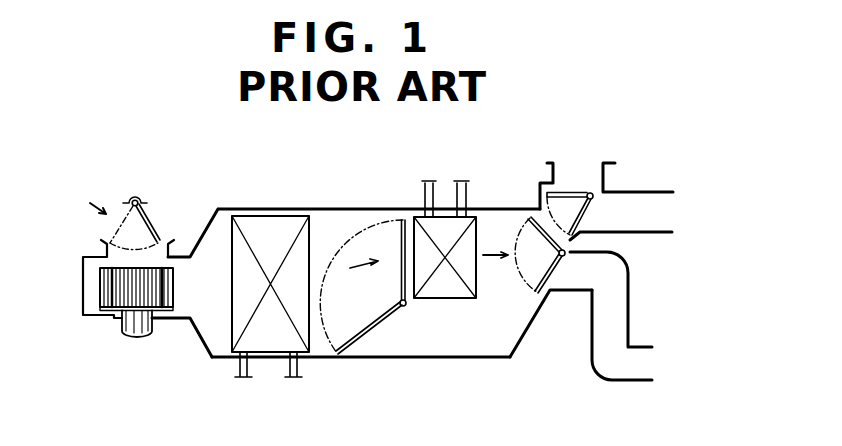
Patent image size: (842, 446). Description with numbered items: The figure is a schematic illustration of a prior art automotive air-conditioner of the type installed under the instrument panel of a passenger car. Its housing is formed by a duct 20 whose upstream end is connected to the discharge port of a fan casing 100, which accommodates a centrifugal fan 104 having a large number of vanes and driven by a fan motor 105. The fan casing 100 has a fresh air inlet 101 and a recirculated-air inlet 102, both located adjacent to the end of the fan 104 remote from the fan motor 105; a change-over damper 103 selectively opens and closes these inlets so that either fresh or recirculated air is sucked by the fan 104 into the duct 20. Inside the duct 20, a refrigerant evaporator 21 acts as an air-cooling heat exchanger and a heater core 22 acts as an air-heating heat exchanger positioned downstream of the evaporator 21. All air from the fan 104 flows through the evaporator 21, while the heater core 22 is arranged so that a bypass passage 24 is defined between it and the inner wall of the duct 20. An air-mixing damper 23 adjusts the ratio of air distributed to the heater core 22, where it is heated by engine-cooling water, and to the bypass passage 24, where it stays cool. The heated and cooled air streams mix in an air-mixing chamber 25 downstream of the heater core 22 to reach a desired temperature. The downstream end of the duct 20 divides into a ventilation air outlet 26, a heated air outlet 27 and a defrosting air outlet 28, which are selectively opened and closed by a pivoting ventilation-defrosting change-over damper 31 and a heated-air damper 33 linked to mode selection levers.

The duct 20 is at (370, 208).
The refrigerant evaporator 21 is at (283, 222).
The heater core 22 is at (477, 233).
The air-mixing damper 23 is at (358, 342).
The bypass passage 24 is at (453, 328).
The air-mixing chamber 25 is at (497, 277).
The ventilation air outlet 26 is at (667, 213).
The heated air outlet 27 is at (645, 361).
The defrosting air outlet 28 is at (567, 175).
The ventilation-defrosting change-over damper 31 is at (577, 192).
The heated-air damper 33 is at (548, 280).
The fan casing 100 is at (83, 283).
The fresh air inlet 101 is at (118, 207).
The recirculated-air inlet 102 is at (155, 212).
The change-over damper 103 is at (157, 231).
The centrifugal fan 104 is at (112, 312).
The fan motor 105 is at (150, 328).